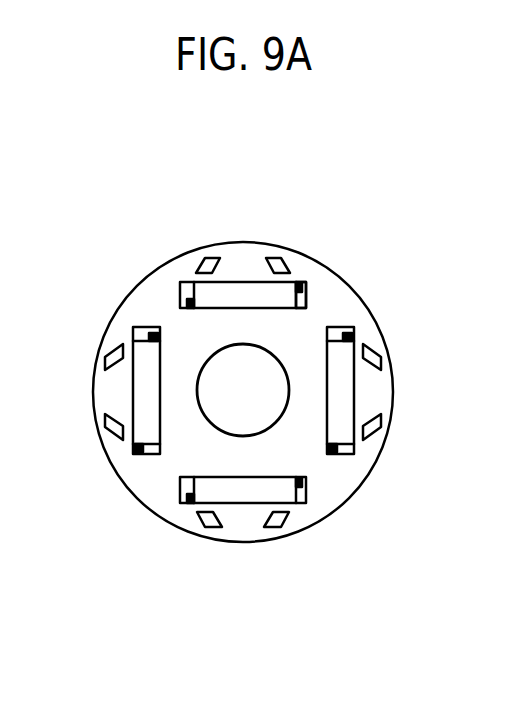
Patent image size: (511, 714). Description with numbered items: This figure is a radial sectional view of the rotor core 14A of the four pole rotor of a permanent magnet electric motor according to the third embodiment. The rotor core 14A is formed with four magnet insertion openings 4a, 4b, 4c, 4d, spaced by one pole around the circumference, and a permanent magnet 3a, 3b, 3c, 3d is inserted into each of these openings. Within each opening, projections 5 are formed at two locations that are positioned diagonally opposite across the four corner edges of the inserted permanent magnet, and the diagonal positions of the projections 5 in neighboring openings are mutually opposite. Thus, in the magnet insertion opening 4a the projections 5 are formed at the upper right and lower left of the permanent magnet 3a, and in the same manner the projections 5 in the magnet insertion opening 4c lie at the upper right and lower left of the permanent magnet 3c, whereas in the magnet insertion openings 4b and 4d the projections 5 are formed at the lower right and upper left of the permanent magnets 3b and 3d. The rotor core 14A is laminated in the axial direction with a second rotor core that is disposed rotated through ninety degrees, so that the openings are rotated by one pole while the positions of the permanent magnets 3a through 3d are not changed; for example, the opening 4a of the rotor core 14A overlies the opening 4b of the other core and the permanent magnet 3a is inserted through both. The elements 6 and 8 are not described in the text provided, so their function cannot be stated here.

The rotor core 14A is at (158, 300).
The permanent magnet 3a is at (252, 295).
The permanent magnet 3b is at (141, 401).
The permanent magnet 3c is at (235, 490).
The permanent magnet 3d is at (340, 393).
The magnet insertion opening 4a is at (242, 284).
The magnet insertion opening 4b is at (138, 403).
The magnet insertion opening 4c is at (247, 500).
The magnet insertion opening 4d is at (347, 375).
The projection 5 is at (302, 286).
The end portion of magnet 6 is at (300, 302).
The projection / rib 8 is at (283, 268).